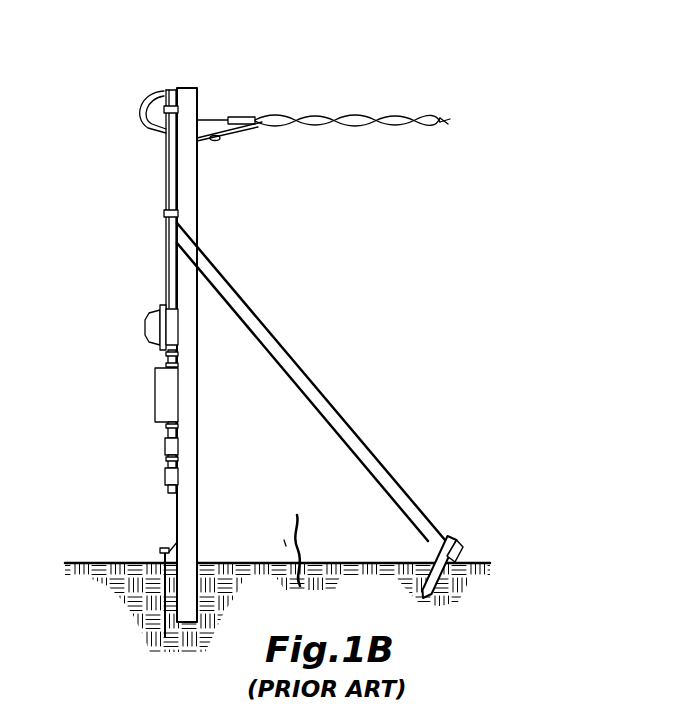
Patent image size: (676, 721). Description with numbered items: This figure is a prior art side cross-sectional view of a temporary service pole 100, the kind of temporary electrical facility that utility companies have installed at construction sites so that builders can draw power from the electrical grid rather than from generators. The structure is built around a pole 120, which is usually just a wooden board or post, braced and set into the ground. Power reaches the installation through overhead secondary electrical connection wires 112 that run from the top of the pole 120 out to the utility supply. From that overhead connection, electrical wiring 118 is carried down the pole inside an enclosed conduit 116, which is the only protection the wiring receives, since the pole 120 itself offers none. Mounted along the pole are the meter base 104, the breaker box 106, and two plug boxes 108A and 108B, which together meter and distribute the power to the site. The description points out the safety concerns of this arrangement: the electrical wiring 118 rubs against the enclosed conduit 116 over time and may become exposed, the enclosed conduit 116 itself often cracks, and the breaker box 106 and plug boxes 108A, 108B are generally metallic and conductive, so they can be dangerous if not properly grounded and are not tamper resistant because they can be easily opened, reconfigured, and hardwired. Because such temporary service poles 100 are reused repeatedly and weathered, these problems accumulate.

The temporary service pole 100 is at (238, 483).
The meter base 104 is at (143, 325).
The breaker box 106 is at (155, 390).
The plug box 108A is at (165, 445).
The plug box 108B is at (165, 477).
The overhead secondary electrical connection wires 112 is at (340, 127).
The enclosed conduit 116 is at (167, 162).
The electrical wiring 118 is at (165, 189).
The pole 120 is at (197, 100).